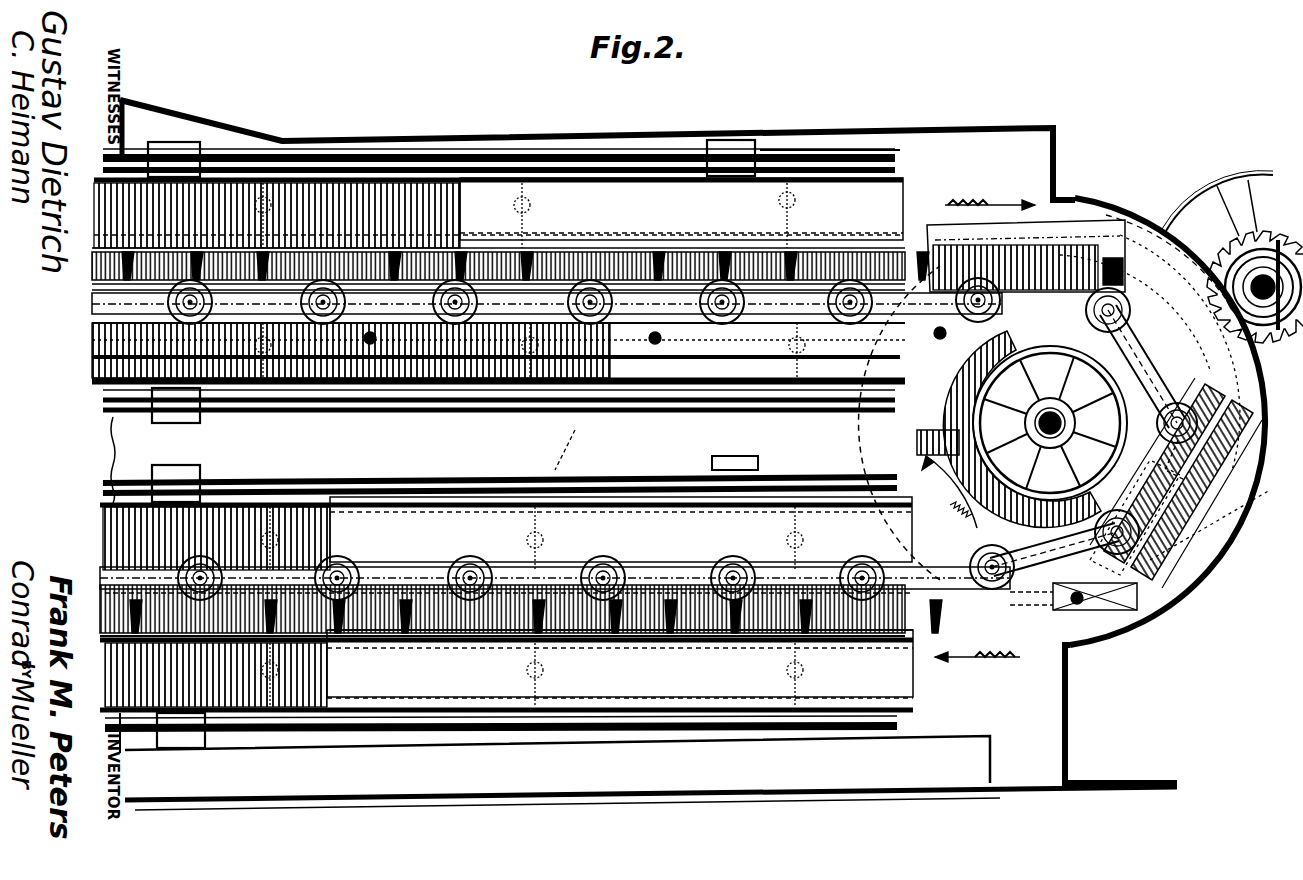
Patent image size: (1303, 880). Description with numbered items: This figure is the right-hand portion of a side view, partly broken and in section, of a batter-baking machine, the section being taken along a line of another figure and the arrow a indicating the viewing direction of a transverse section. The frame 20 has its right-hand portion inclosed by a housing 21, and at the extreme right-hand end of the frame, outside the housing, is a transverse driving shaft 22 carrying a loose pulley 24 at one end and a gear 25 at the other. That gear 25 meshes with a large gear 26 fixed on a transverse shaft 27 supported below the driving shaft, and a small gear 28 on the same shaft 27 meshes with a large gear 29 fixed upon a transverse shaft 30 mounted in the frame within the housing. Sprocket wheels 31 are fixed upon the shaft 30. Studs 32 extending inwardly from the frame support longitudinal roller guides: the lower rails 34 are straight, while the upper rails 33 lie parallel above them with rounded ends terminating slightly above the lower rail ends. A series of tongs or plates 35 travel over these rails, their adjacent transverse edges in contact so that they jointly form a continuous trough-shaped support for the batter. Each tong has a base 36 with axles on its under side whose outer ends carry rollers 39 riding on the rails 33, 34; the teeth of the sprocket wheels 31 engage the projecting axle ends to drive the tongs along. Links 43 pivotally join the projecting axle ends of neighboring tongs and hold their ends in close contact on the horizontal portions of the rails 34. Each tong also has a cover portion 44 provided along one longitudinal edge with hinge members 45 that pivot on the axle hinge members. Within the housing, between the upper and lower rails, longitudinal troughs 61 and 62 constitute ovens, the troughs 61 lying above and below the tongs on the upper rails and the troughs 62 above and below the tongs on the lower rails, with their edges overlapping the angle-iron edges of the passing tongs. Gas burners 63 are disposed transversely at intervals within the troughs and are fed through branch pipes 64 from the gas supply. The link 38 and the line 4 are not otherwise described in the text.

The frame 20 is at (246, 748).
The housing 21 is at (1158, 236).
The driving shaft 22 is at (1222, 256).
The loose pulley 24 is at (1250, 176).
The gear 25 is at (1259, 252).
The large gear 26 is at (1225, 555).
The transverse shaft 27 is at (792, 140).
The small gear 28 is at (1225, 530).
The large gear 29 is at (858, 433).
The transverse shaft 30 is at (1074, 413).
The sprocket wheels 31 is at (948, 407).
The studs 32 is at (1070, 611).
The upper rails 33 is at (92, 338).
The lower rails 34 is at (882, 632).
The tongs or plates 35 is at (1050, 245).
The base 36 is at (92, 305).
The link arm 38 is at (1130, 520).
The rollers 39 is at (738, 556).
The links 43 is at (818, 560).
The cover portions 44 is at (1104, 250).
The hinge members 45 is at (712, 665).
The troughs 61 is at (904, 190).
The troughs 62 is at (380, 580).
The gas burners 63 is at (272, 207).
The branch pipes 64 is at (578, 142).
The leader 4 is at (569, 441).
The arrow a is at (990, 194).